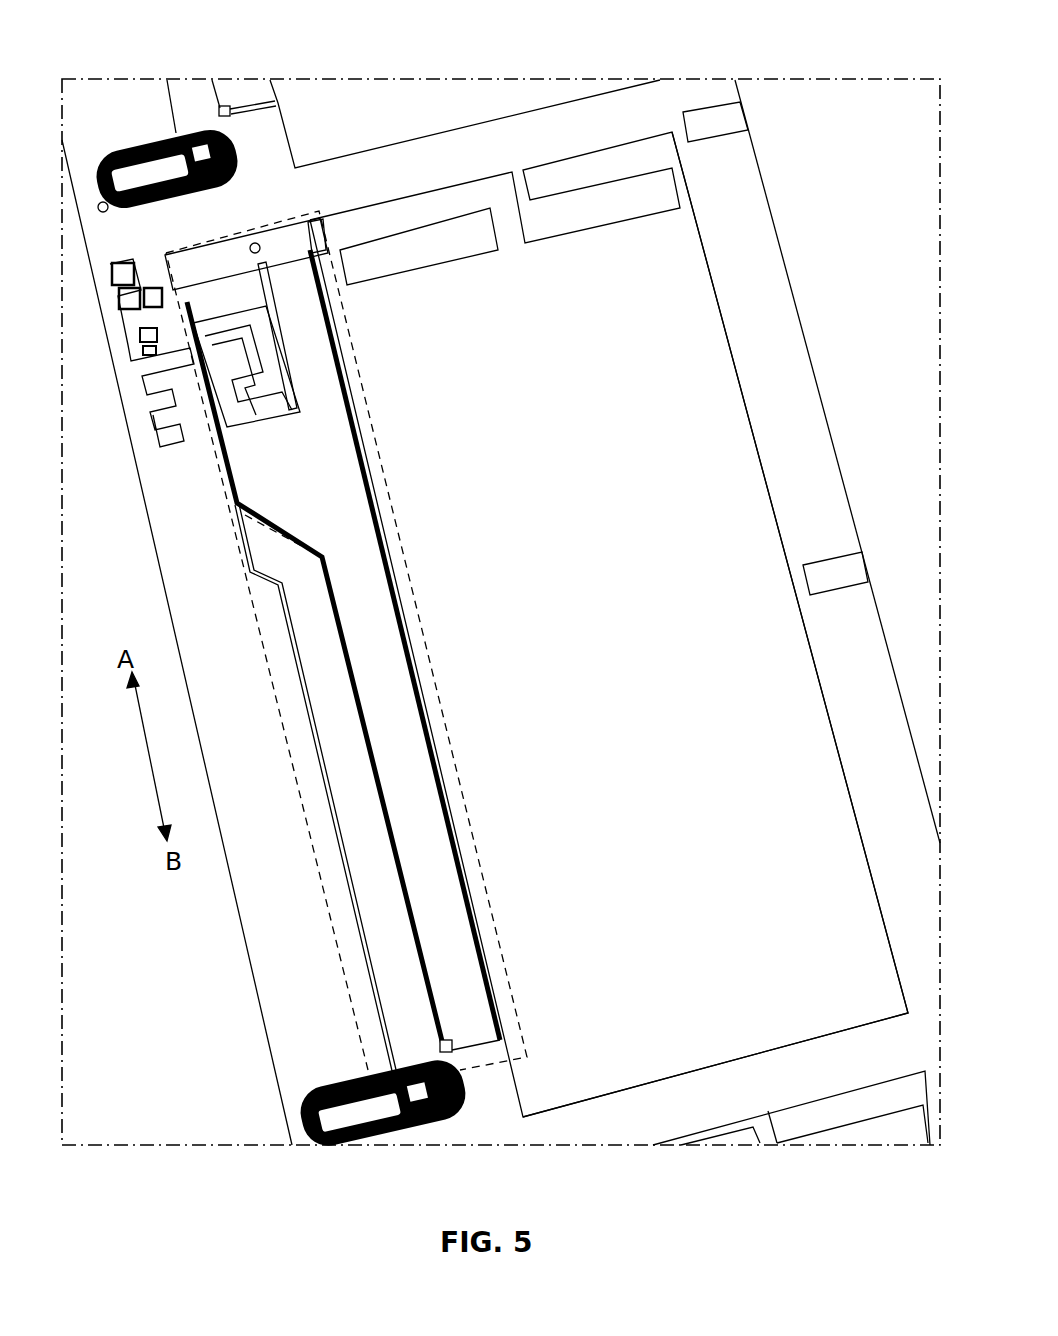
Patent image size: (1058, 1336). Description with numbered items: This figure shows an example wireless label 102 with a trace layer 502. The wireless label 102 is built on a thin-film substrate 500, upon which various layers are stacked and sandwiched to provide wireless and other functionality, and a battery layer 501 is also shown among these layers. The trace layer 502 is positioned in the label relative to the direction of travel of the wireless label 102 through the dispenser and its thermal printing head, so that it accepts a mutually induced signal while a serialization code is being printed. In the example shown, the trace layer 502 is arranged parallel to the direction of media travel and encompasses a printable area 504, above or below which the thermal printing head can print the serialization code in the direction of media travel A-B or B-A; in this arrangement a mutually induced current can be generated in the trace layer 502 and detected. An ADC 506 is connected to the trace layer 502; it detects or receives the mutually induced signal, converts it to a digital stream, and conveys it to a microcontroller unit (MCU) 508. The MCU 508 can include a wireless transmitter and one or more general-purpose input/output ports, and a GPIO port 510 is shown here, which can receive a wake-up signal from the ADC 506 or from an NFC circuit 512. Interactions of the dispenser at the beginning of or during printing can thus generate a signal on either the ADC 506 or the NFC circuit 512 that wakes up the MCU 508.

The wireless label 102 is at (860, 44).
The thin-film substrate 500 is at (853, 602).
The battery layer 501 is at (833, 835).
The trace layer 502 is at (333, 560).
The printable area 504 is at (391, 712).
The ADC 506 is at (150, 286).
The microcontroller unit (MCU) 508 is at (164, 338).
The GPIO port 510 is at (144, 268).
The NFC circuit 512 is at (330, 1090).